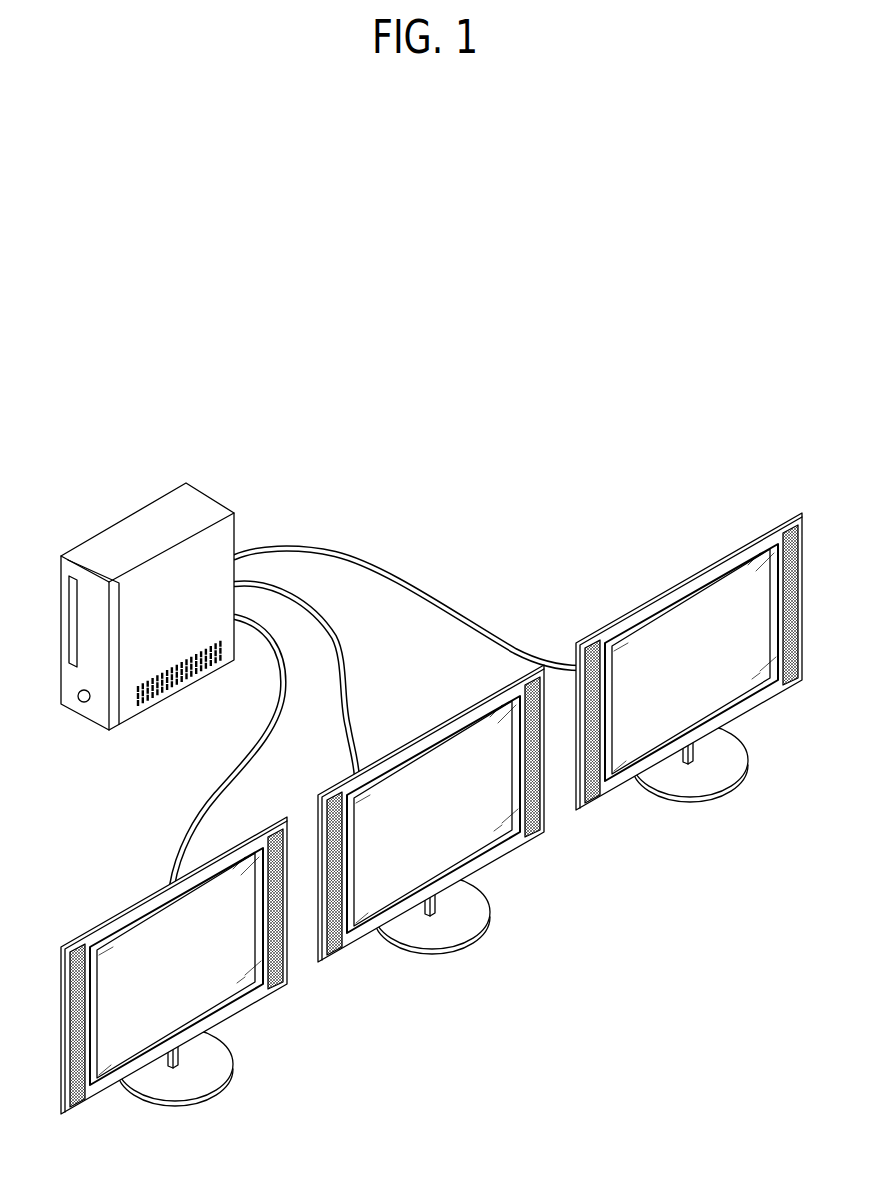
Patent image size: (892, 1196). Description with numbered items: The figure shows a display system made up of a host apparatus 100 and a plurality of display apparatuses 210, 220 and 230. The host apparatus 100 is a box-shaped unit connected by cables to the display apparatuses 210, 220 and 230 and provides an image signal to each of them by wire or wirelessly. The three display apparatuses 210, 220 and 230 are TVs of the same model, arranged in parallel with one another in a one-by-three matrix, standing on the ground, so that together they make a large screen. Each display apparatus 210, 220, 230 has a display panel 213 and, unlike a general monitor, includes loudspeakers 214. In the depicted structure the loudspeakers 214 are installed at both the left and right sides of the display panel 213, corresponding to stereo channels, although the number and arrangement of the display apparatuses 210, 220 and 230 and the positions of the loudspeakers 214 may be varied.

The host apparatus 100 is at (116, 501).
The display apparatus 210 is at (199, 996).
The display apparatus 220 is at (478, 963).
The display apparatus 230 is at (738, 813).
The display panel 213 is at (210, 983).
The loudspeaker 214 is at (77, 1092).